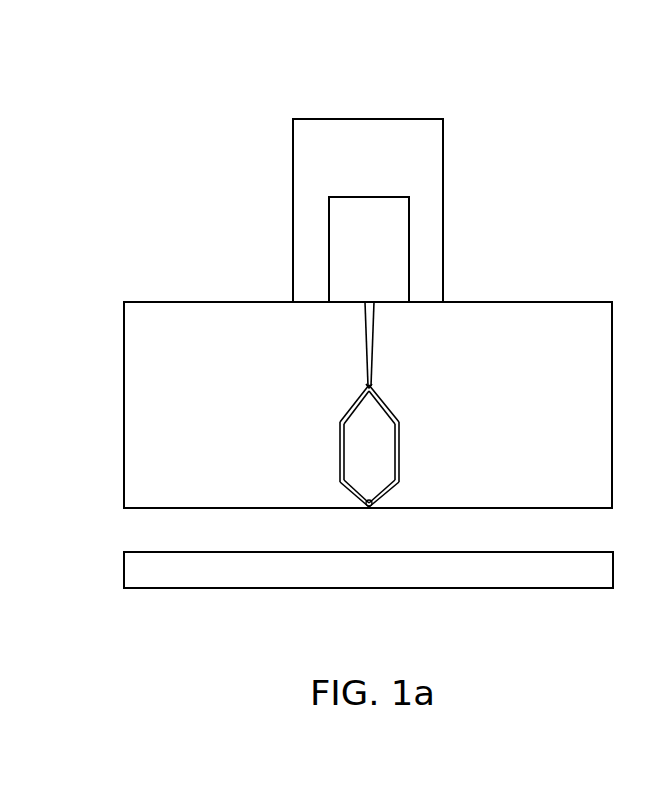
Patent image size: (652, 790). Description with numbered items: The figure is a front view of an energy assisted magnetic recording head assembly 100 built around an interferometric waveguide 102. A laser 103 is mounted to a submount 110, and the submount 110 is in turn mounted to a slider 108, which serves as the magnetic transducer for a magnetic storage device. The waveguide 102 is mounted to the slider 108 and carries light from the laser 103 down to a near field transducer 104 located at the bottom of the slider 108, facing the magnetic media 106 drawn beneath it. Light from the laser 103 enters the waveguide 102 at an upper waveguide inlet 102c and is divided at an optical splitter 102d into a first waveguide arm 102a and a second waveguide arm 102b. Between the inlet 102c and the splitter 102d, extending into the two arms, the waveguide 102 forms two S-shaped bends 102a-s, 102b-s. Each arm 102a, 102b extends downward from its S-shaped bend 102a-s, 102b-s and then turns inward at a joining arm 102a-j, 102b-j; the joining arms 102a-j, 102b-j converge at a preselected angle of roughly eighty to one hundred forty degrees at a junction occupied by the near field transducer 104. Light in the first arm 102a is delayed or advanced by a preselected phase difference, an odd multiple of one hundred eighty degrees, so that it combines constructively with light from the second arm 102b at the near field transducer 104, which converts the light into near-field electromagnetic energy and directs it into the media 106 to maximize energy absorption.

The energy assisted magnetic recording head assembly 100 is at (548, 118).
The submount 110 is at (368, 119).
The laser 103 is at (383, 277).
The slider 108 is at (565, 302).
The magnetic media 106 is at (427, 582).
The interferometric waveguide 102 is at (369, 404).
The upper waveguide inlet 102c is at (364, 306).
The optical splitter 102d is at (364, 390).
The first waveguide arm 102a is at (430, 446).
The S-shaped bend of first waveguide arm 102a-s is at (396, 404).
The joining arm of first waveguide arm 102a-j is at (398, 489).
The second waveguide arm 102b is at (308, 446).
The S-shaped bend of second waveguide arm 102b-s is at (341, 419).
The joining arm of second waveguide arm 102b-j is at (344, 491).
The near field transducer 104 is at (369, 499).